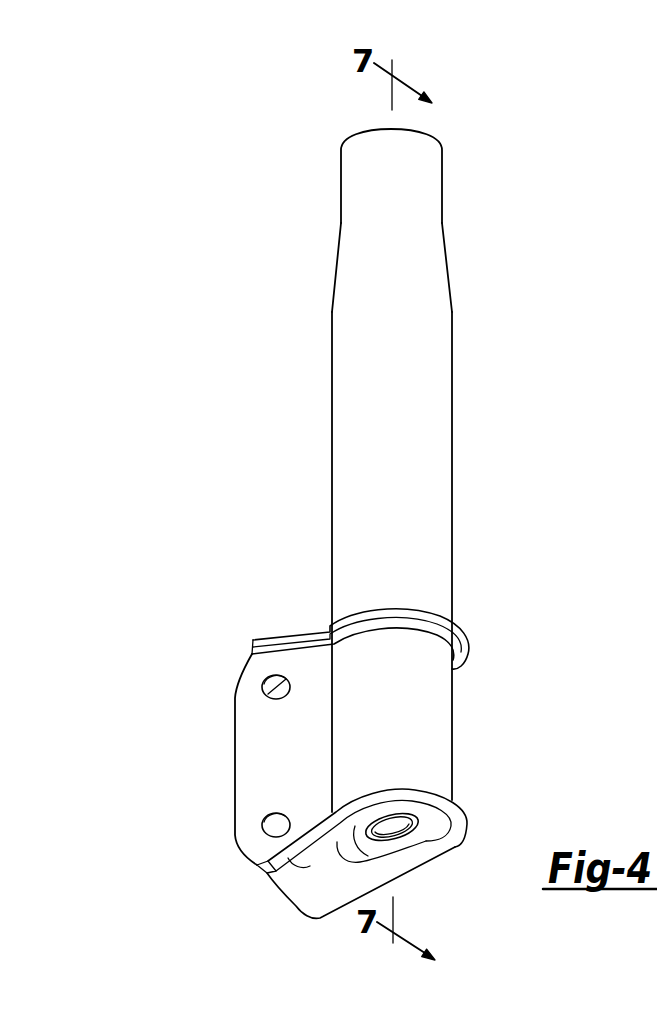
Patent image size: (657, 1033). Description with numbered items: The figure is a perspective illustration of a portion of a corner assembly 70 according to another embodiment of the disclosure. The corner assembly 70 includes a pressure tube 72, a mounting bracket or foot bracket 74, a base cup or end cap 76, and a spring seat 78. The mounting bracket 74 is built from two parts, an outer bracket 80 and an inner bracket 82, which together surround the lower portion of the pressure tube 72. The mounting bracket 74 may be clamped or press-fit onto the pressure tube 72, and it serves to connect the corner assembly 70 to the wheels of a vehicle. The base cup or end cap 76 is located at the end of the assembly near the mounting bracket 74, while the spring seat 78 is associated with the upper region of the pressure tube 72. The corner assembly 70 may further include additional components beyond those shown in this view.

The corner assembly 70 is at (396, 516).
The pressure tube 72 is at (423, 573).
The mounting bracket 74 is at (452, 714).
The base cup 76 is at (397, 830).
The spring seat 78 is at (500, 350).
The outer bracket 80 is at (440, 785).
The inner bracket 82 is at (287, 880).